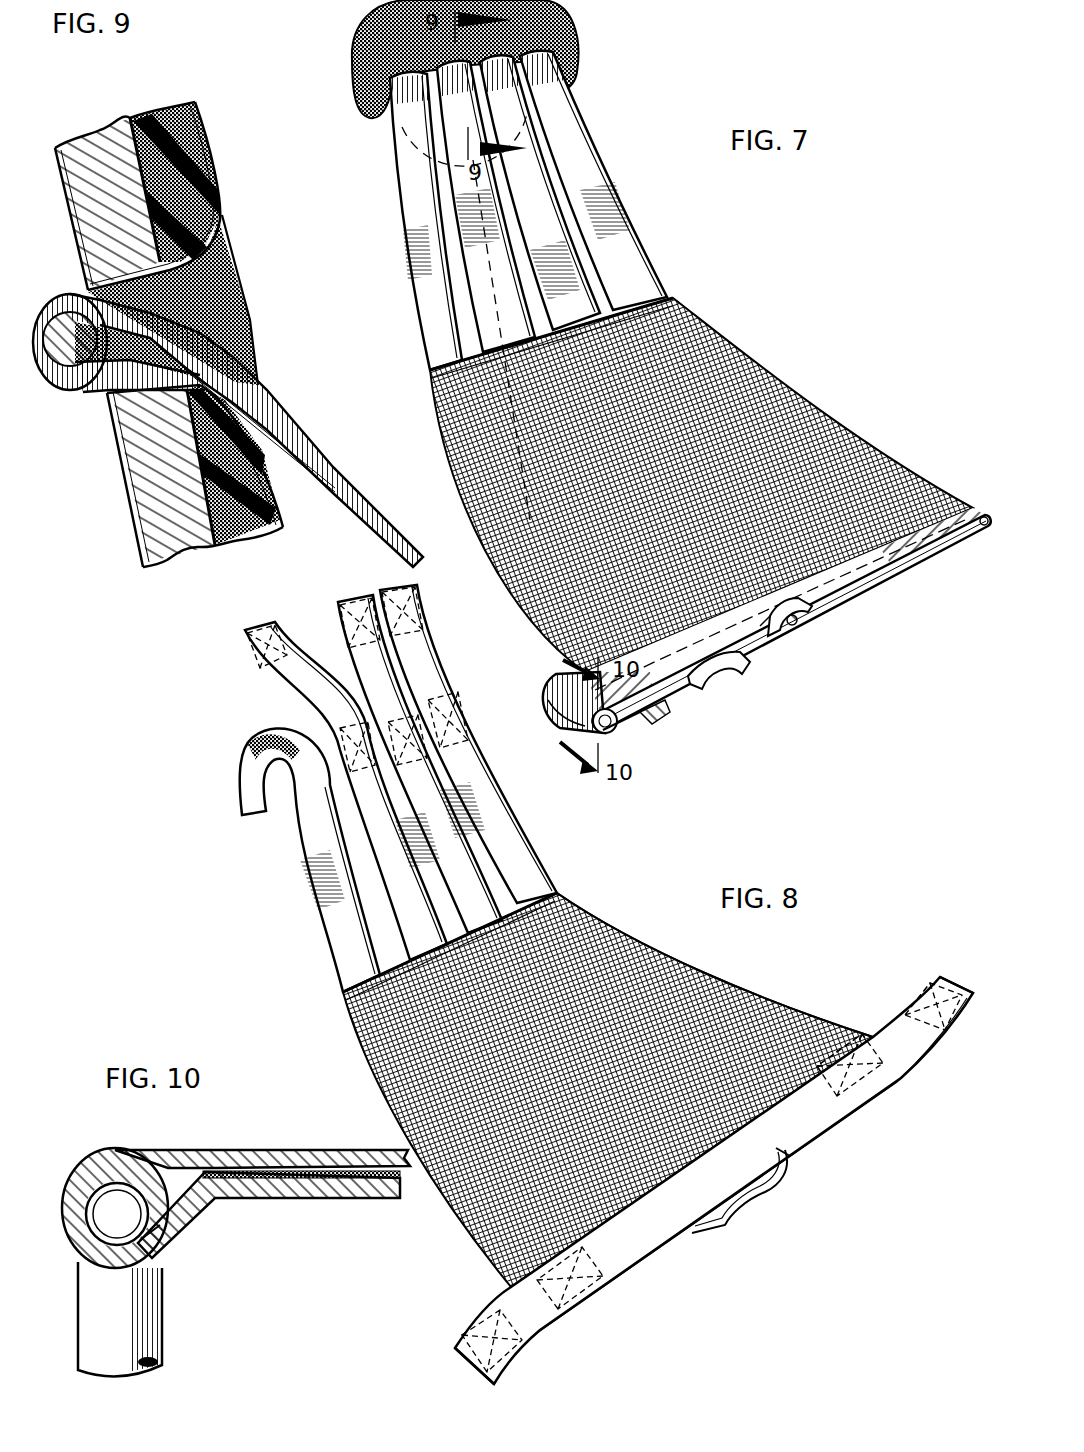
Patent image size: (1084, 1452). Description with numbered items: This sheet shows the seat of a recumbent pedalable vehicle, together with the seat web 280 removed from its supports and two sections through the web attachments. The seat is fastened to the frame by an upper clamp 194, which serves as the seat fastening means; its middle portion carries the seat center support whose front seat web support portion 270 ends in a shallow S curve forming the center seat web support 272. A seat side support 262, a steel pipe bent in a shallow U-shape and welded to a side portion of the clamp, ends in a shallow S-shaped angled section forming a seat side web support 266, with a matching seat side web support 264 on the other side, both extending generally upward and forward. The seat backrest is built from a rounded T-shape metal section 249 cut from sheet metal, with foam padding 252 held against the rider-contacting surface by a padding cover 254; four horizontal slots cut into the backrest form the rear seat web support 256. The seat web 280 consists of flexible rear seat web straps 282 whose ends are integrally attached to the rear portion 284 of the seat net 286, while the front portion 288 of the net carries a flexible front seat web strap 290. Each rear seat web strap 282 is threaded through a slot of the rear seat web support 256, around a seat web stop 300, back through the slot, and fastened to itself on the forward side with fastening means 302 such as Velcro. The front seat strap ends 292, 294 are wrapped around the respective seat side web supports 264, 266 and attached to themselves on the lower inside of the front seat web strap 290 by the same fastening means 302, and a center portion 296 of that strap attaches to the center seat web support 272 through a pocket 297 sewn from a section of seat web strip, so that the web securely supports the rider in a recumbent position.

In FIG. 7, the upper clamp 194 is at (723, 677).
In FIG. 9, the rounded T-shape metal section 249 is at (93, 155).
In FIG. 9, the foam padding 252 is at (172, 106).
In FIG. 9, the padding cover 254 is at (210, 140).
In FIG. 9, the rear seat web support 256 is at (233, 265).
In FIG. 7, the rear seat web support 256 is at (350, 58).
In FIG. 7, the seat side support 262 is at (550, 710).
In FIG. 10, the seat side support 262 is at (147, 1330).
In FIG. 7, the seat side web support 264 is at (973, 505).
In FIG. 7, the seat side web support 266 is at (607, 730).
In FIG. 10, the seat side web support 266 is at (157, 1237).
In FIG. 7, the front seat web support portion 270 is at (767, 632).
In FIG. 7, the center seat web support 272 is at (807, 625).
In FIG. 7, the seat web 280 is at (748, 335).
In FIG. 8, the seat web 280 is at (652, 905).
In FIG. 9, the rear seat web straps 282 is at (267, 377).
In FIG. 7, the rear seat web straps 282 is at (473, 233).
In FIG. 8, the rear seat web straps 282 is at (377, 874).
In FIG. 7, the rear portion of seat net 284 is at (622, 292).
In FIG. 8, the rear portion of seat net 284 is at (520, 907).
In FIG. 7, the seat net 286 is at (767, 402).
In FIG. 8, the seat net 286 is at (700, 997).
In FIG. 7, the front portion of seat net 288 is at (838, 542).
In FIG. 8, the front portion of seat net 288 is at (773, 1087).
In FIG. 7, the front seat web strap 290 is at (791, 622).
In FIG. 8, the front seat web strap 290 is at (840, 1107).
In FIG. 10, the front seat web strap 290 is at (267, 1152).
In FIG. 8, the front seat strap end 292 is at (893, 1027).
In FIG. 7, the front seat strap end 294 is at (563, 717).
In FIG. 8, the front seat strap end 294 is at (533, 1343).
In FIG. 10, the front seat strap end 294 is at (268, 1198).
In FIG. 8, the center portion 296 is at (780, 1153).
In FIG. 7, the pocket 297 is at (790, 637).
In FIG. 8, the pocket 297 is at (747, 1203).
In FIG. 9, the seat web stop 300 is at (77, 393).
In FIG. 9, the fastening means 302 is at (290, 433).
In FIG. 8, the fastening means 302 is at (330, 612).
In FIG. 10, the fastening means 302 is at (333, 1196).